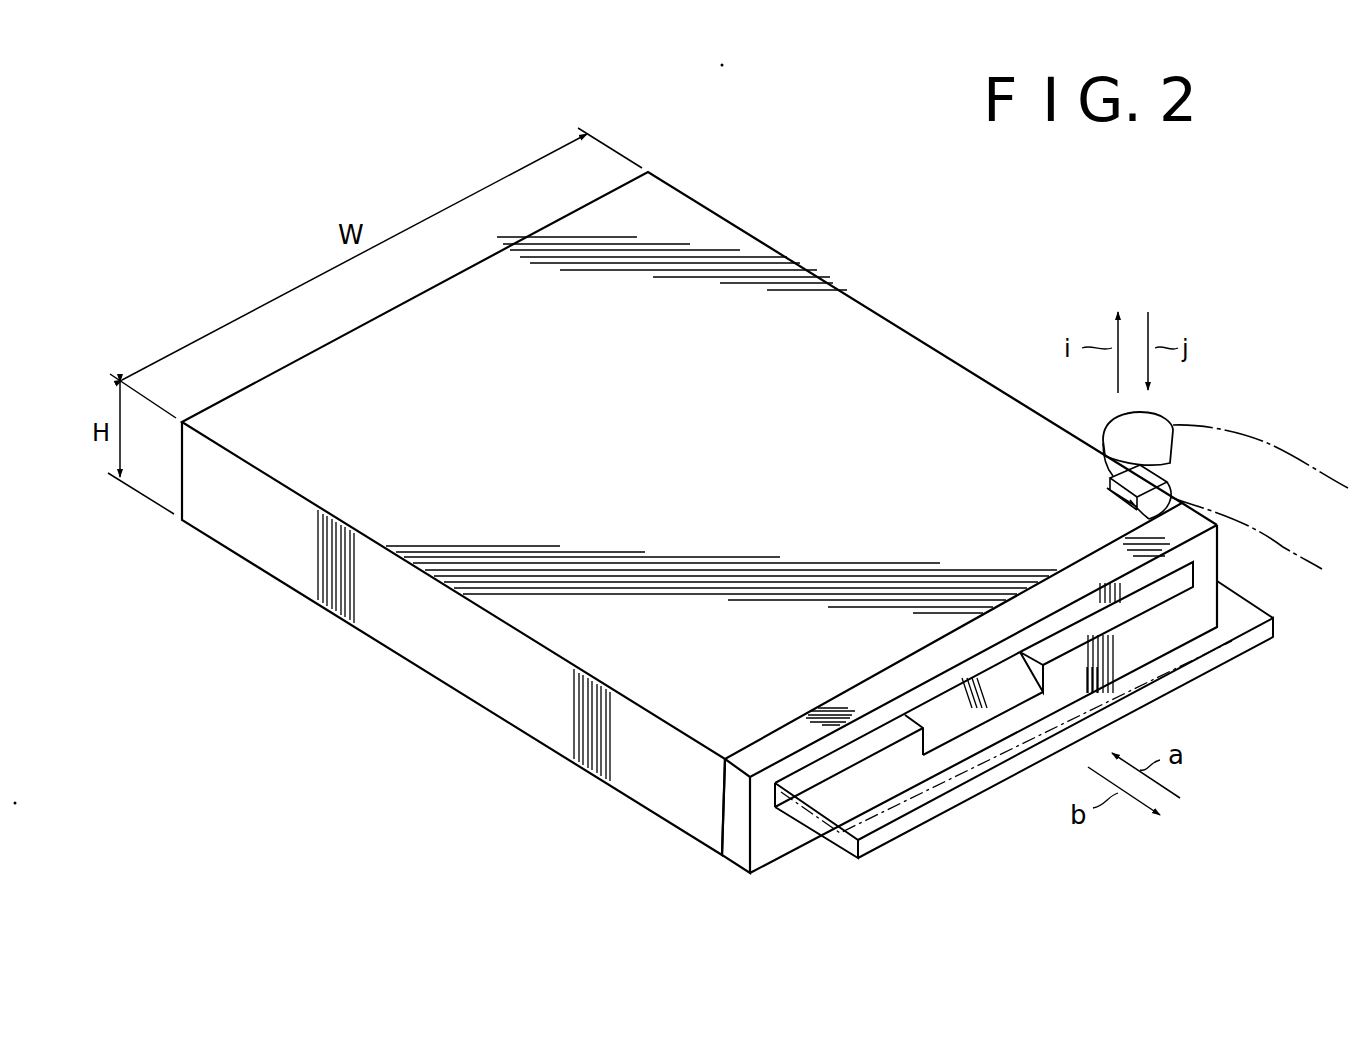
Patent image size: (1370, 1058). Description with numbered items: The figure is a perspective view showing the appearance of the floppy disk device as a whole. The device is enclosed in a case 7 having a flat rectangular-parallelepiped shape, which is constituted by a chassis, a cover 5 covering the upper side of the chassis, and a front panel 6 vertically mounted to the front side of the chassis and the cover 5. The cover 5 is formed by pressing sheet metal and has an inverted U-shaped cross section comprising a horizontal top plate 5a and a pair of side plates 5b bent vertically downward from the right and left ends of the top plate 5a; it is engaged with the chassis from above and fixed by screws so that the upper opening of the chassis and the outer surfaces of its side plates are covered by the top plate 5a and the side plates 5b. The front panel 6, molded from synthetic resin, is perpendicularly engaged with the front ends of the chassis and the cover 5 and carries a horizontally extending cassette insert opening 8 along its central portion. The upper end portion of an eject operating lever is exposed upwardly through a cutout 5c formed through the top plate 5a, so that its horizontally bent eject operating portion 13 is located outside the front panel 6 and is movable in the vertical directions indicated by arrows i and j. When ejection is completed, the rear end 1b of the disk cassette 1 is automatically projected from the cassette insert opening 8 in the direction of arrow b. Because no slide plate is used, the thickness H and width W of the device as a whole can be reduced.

The disk cassette 1 is at (1033, 719).
The rear end of the cassette 1b is at (1192, 670).
The cover 5 is at (699, 522).
The top plate 5a is at (340, 497).
The side plates 5b is at (442, 634).
The cutout 5c is at (1162, 512).
The front panel 6 is at (968, 750).
The case 7 is at (931, 305).
The cassette insert opening 8 is at (861, 743).
The eject operating portion 13 is at (1133, 477).